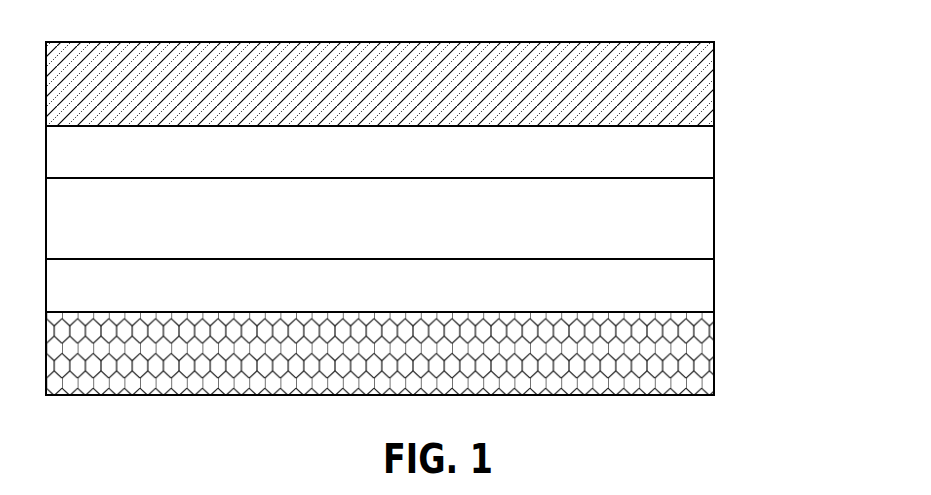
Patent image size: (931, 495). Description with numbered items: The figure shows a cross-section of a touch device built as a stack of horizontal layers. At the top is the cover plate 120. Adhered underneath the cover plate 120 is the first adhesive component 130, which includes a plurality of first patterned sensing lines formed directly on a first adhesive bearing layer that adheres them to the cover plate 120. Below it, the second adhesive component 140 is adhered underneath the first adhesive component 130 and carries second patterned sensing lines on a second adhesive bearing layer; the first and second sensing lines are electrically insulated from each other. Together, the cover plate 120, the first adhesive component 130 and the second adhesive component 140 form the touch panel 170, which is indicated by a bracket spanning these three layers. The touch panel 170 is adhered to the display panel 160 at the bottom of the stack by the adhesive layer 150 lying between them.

The cover plate 120 is at (710, 87).
The first adhesive component 130 is at (700, 153).
The second adhesive component 140 is at (412, 218).
The adhesive layer 150 is at (700, 297).
The display panel 160 is at (711, 357).
The touch panel 170 is at (449, 150).